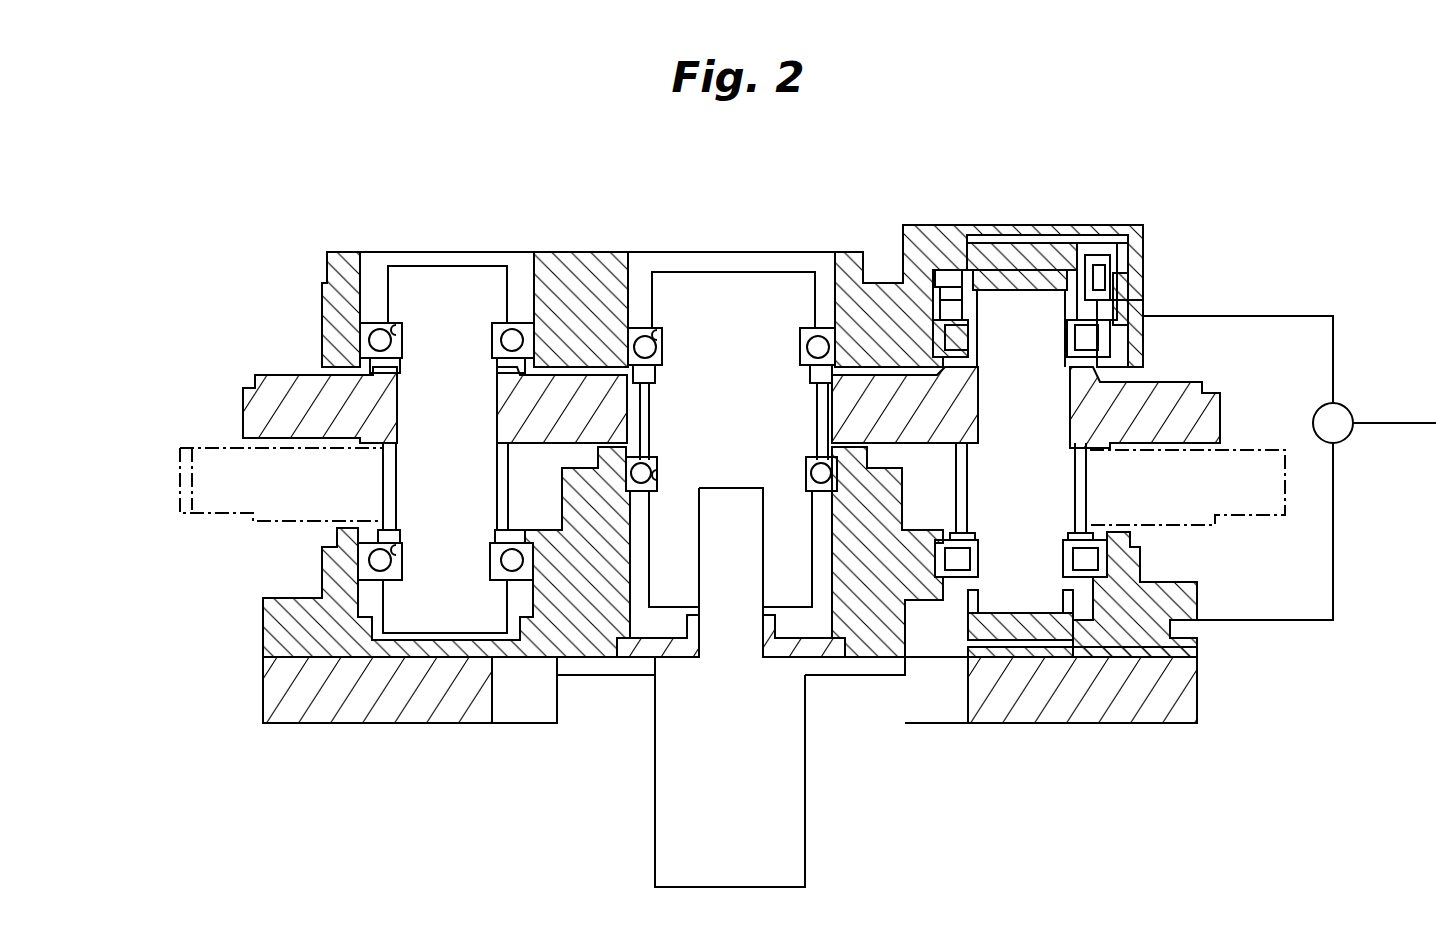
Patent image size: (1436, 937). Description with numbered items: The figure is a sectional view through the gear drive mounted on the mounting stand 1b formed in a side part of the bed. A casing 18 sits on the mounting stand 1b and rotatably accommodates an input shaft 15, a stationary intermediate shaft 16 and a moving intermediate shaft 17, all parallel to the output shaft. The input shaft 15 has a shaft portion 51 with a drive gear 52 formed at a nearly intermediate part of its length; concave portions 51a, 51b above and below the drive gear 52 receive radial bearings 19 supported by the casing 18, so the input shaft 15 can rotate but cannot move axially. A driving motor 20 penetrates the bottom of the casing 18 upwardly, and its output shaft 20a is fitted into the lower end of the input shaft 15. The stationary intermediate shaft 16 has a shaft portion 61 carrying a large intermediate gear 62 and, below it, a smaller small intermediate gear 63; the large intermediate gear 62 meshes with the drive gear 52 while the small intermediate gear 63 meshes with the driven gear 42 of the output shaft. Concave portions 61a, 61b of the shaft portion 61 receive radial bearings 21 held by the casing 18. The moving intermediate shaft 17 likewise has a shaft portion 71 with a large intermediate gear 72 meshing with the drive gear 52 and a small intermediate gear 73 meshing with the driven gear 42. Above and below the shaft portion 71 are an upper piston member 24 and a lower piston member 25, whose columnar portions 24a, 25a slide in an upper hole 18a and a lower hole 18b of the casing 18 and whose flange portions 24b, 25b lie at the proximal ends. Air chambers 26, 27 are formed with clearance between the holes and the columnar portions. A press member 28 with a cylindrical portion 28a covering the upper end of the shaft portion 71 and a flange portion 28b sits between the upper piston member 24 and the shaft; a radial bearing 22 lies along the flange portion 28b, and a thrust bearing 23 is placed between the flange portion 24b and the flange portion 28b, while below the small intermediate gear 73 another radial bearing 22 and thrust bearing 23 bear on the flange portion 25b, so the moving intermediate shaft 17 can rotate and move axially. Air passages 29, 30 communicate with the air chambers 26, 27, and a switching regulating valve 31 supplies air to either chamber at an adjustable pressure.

The mounting stand 1b is at (1138, 728).
The input shaft 15 is at (713, 266).
The stationary intermediate shaft 16 is at (443, 262).
The moving intermediate shaft 17 is at (1022, 290).
The casing 18 is at (1140, 228).
The upper hole 18a is at (1050, 262).
The lower hole 18b is at (1017, 645).
The radial bearing 19 is at (800, 347).
The driving motor 20 is at (805, 850).
The output shaft of the driving motor 20a is at (745, 640).
The radial bearing 21 is at (492, 342).
The radial bearing 22 is at (985, 330).
The thrust bearing 23 is at (940, 305).
The upper piston member 24 is at (985, 240).
The columnar portion 24a is at (962, 272).
The flange portion 24b is at (950, 283).
The lower piston member 25 is at (988, 645).
The columnar portion 25a is at (945, 612).
The flange portion 25b is at (935, 605).
The air chamber 26 is at (1090, 272).
The air chamber 27 is at (1052, 648).
The press member 28 is at (1088, 296).
The cylindrical portion 28a is at (1045, 285).
The flange portion 28b is at (945, 290).
The air passage 29 is at (1145, 325).
The air passage 30 is at (1187, 628).
The switching regulating valve 31 is at (1347, 410).
The driven gear 42 is at (180, 465).
The shaft portion 51 is at (760, 264).
The concave portion 51a is at (662, 330).
The concave portion 51b is at (660, 478).
The drive gear 52 is at (637, 326).
The shaft portion 61 is at (478, 260).
The concave portion 61a is at (402, 328).
The concave portion 61b is at (402, 549).
The large intermediate gear 62 is at (290, 374).
The small intermediate gear 63 is at (383, 488).
The shaft portion 71 is at (1065, 288).
The large intermediate gear 72 is at (1205, 382).
The small intermediate gear 73 is at (1090, 502).